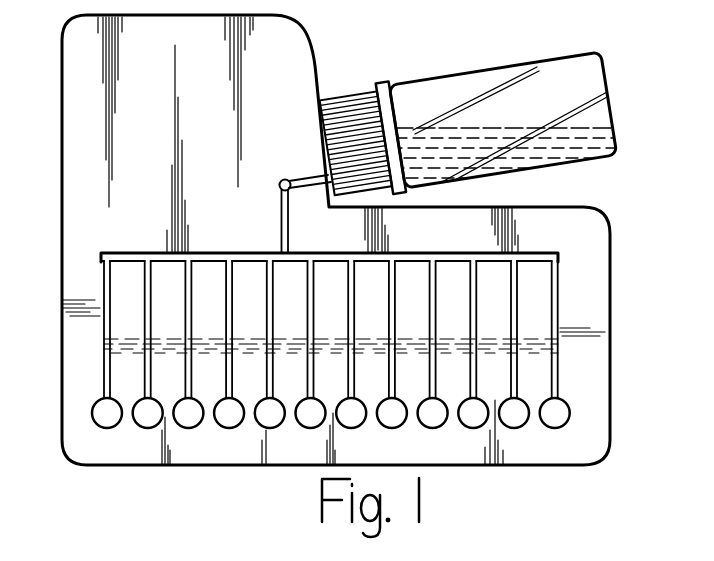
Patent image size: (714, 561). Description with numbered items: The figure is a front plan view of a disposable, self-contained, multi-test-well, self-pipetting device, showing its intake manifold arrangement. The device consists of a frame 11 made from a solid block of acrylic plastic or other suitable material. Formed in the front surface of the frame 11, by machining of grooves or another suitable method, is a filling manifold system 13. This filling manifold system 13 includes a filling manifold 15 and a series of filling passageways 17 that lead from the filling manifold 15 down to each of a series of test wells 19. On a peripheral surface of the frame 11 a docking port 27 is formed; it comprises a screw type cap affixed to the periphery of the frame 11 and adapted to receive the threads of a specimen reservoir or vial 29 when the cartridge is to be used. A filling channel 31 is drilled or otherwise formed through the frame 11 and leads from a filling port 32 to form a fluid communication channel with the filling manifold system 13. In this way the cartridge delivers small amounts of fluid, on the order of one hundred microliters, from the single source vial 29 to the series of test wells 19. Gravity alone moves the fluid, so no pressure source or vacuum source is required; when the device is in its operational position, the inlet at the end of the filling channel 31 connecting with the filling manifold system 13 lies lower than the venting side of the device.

The frame 11 is at (56, 263).
The filling manifold system 13 is at (267, 219).
The filling manifold 15 is at (243, 253).
The filling passageways 17 is at (146, 333).
The test wells 19 is at (112, 407).
The docking port 27 is at (355, 105).
The specimen vial 29 is at (470, 75).
The filling channel 31 is at (301, 177).
The filling port 32 is at (327, 190).